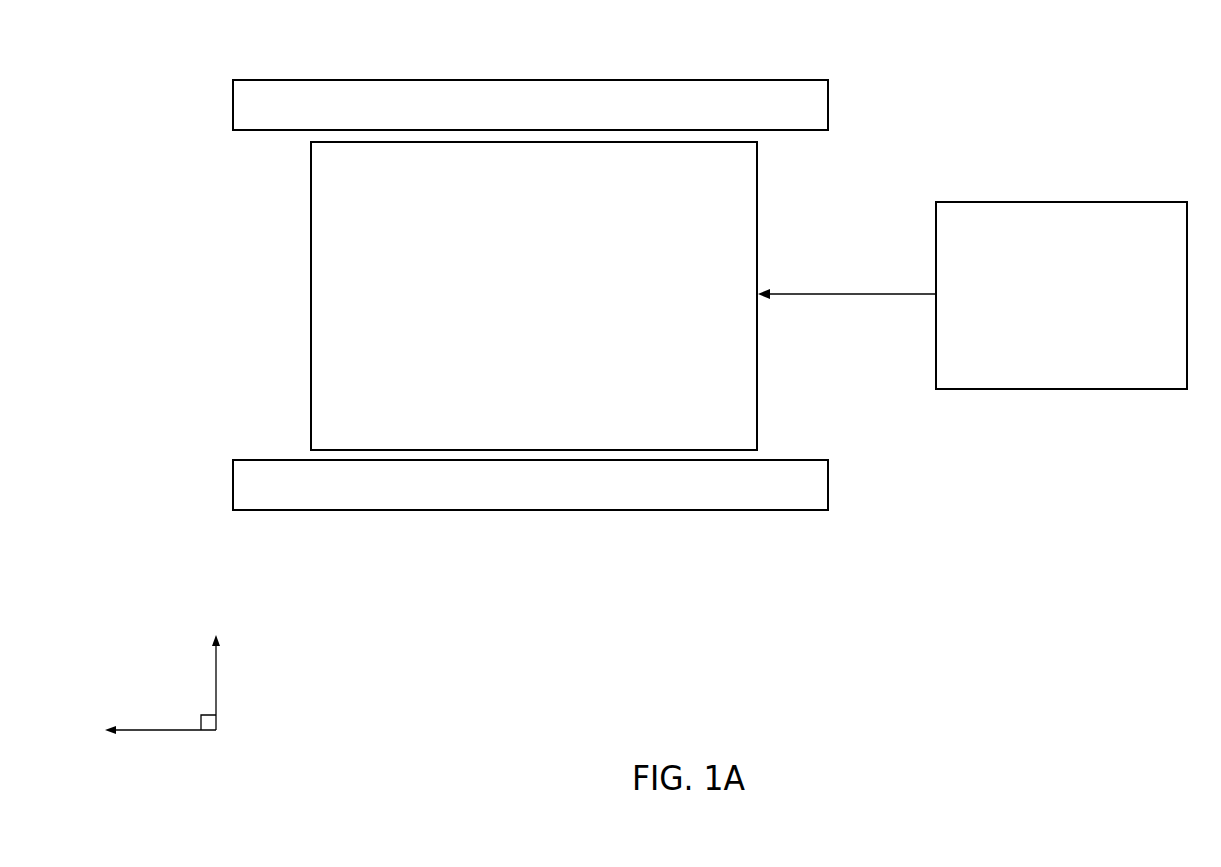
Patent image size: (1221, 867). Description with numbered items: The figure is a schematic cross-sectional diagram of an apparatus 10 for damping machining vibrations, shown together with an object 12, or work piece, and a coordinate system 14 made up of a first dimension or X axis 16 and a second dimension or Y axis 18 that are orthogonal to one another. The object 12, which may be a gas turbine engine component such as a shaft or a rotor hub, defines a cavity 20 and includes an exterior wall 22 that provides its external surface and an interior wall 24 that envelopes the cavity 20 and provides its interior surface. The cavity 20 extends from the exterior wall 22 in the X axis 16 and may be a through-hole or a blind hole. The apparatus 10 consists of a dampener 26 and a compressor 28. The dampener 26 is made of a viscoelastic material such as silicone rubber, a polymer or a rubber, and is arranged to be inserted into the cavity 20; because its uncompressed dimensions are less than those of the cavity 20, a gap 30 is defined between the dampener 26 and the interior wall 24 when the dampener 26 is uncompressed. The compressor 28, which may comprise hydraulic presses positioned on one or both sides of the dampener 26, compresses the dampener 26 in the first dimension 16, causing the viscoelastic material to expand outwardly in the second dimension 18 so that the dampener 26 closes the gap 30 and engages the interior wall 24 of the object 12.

The apparatus 10 is at (972, 112).
The object 12 is at (778, 500).
The coordinate system 14 is at (254, 685).
The first dimension (X axis) 16 is at (173, 733).
The second dimension (Y axis) 18 is at (216, 655).
The cavity 20 is at (210, 271).
The exterior wall 22 is at (233, 107).
The interior wall 24 is at (804, 130).
The dampener 26 is at (320, 300).
The compressor 28 is at (1138, 367).
The gap 30 is at (292, 144).